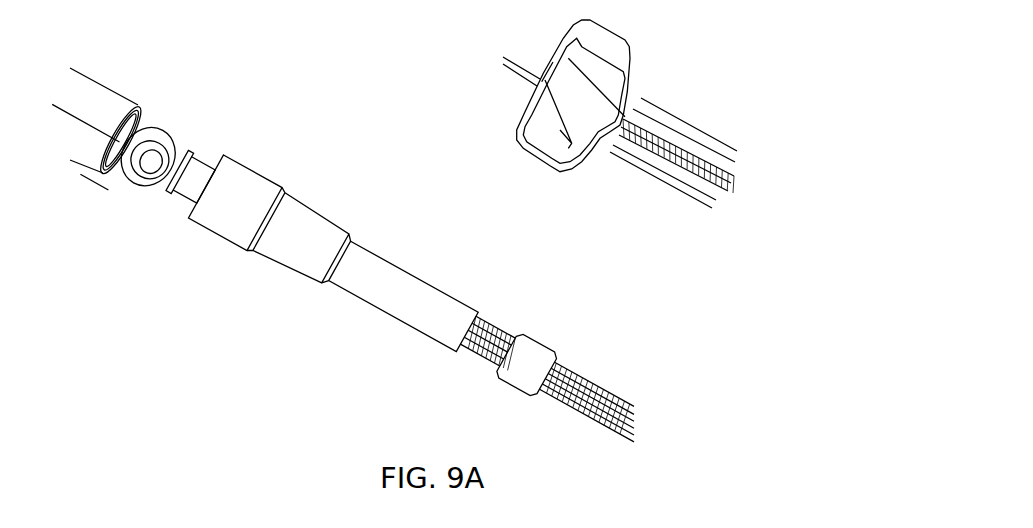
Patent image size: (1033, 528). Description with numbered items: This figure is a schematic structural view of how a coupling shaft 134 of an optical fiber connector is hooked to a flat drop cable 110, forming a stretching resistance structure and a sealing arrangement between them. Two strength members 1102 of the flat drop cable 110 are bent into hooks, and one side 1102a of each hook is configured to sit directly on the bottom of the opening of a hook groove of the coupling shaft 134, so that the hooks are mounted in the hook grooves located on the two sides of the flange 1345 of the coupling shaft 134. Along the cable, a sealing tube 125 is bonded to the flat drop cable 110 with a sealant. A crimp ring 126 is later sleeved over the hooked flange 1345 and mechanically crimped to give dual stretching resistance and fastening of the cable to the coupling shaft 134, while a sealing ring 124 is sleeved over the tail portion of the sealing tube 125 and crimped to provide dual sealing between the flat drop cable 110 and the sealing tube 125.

The coupling shaft 134 is at (118, 86).
The flange 1345 is at (172, 132).
The crimp ring 126 is at (281, 179).
The sealing tube 125 is at (435, 271).
The sealing ring 124 is at (545, 336).
The flat drop cable 110 is at (621, 389).
The strength member 1102 is at (647, 52).
The side of hook 1102a is at (548, 55).